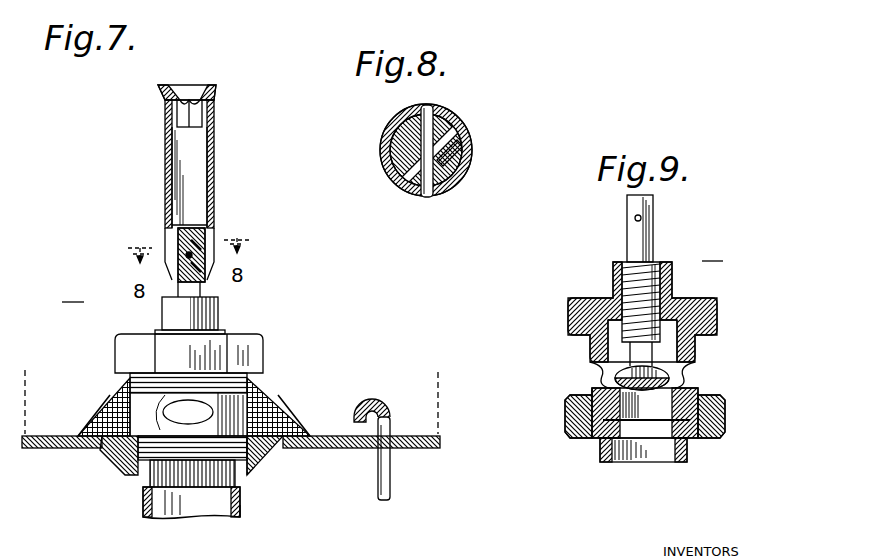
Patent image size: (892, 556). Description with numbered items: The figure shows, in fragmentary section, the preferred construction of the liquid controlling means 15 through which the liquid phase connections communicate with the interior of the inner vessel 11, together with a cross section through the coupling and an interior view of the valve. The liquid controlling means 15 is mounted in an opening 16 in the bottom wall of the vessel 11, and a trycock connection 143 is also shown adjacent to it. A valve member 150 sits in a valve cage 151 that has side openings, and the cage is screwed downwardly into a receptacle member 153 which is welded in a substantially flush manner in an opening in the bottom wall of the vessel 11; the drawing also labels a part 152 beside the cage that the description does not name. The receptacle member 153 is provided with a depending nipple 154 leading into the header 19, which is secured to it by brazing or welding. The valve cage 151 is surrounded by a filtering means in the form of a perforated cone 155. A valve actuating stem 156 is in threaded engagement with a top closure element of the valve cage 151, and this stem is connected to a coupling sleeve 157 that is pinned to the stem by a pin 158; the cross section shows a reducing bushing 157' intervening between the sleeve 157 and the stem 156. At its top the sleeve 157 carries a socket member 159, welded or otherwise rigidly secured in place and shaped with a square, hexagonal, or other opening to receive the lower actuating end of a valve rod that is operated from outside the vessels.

In FIG. 7, the inner vessel 11 is at (418, 434).
In FIG. 7, the liquid controlling means 15 is at (55, 358).
In FIG. 9, the liquid controlling means 15 is at (714, 251).
In FIG. 7, the opening 16 is at (281, 448).
In FIG. 7, the header 19 is at (243, 513).
In FIG. 7, the trycock connection 143 is at (371, 401).
In FIG. 9, the valve member 150 is at (671, 378).
In FIG. 7, the valve cage 151 is at (152, 398).
In FIG. 9, the valve cage 151 is at (698, 352).
In FIG. 7, the gasket 152 is at (94, 418).
In FIG. 9, the gasket 152 is at (612, 372).
In FIG. 7, the receptacle member 153 is at (121, 462).
In FIG. 9, the receptacle member 153 is at (726, 413).
In FIG. 7, the depending nipple 154 is at (233, 494).
In FIG. 9, the depending nipple 154 is at (689, 450).
In FIG. 7, the perforated cone 155 is at (113, 398).
In FIG. 7, the valve actuating stem 156 is at (202, 292).
In FIG. 8, the valve actuating stem 156 is at (408, 150).
In FIG. 9, the valve actuating stem 156 is at (655, 223).
In FIG. 7, the coupling sleeve 157 is at (219, 190).
In FIG. 8, the coupling sleeve 157 is at (417, 160).
In FIG. 7, the reducing bushing 157' is at (162, 244).
In FIG. 8, the reducing bushing 157' is at (455, 152).
In FIG. 7, the pin 158 is at (205, 238).
In FIG. 8, the pin 158 is at (434, 116).
In FIG. 7, the socket member 159 is at (214, 93).